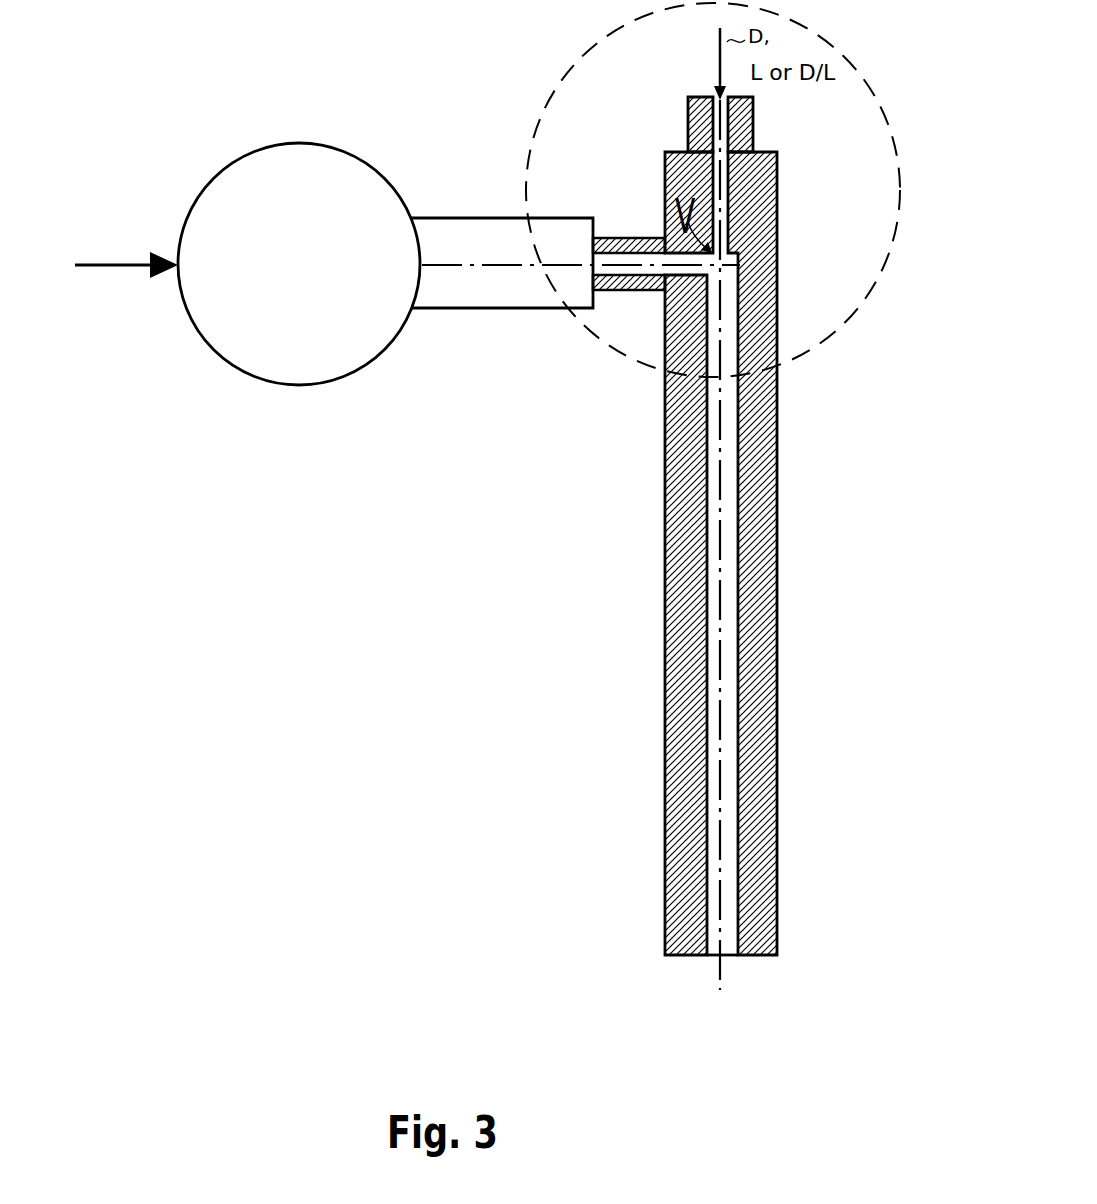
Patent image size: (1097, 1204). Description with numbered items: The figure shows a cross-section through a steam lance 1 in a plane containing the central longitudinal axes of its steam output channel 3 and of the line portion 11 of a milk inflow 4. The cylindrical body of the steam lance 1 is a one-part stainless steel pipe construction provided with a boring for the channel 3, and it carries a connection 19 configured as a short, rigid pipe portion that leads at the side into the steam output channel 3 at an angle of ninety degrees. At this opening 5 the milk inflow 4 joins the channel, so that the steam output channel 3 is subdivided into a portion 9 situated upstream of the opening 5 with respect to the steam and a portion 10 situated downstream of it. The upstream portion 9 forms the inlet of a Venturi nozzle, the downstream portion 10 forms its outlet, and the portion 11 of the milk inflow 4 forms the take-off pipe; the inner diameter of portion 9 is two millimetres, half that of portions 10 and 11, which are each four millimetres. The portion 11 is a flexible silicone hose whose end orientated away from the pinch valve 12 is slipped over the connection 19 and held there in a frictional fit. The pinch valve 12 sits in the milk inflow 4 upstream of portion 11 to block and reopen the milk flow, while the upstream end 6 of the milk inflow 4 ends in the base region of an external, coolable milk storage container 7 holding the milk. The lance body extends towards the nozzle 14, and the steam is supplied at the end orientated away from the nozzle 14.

The steam lance 1 is at (739, 539).
The steam output channel 3 is at (724, 162).
The milk inflow 4 is at (470, 232).
The opening 5 is at (612, 348).
The upstream end 6 is at (103, 273).
The milk storage container 7 is at (126, 323).
The upstream portion of the steam output channel 9 is at (788, 153).
The downstream portion of the steam output channel 10 is at (607, 940).
The portion of the milk inflow 11 is at (575, 178).
The pinch valve 12 is at (317, 335).
The nozzle 14 is at (770, 884).
The connection 19 is at (625, 238).